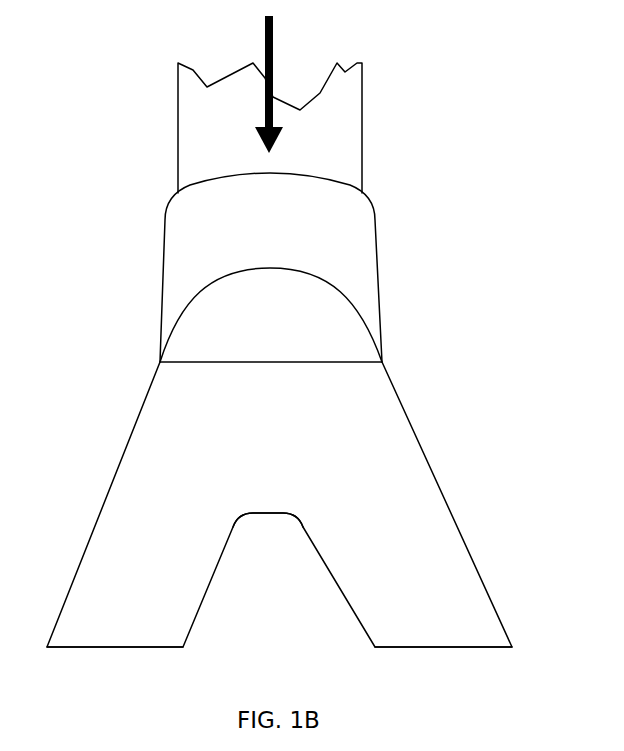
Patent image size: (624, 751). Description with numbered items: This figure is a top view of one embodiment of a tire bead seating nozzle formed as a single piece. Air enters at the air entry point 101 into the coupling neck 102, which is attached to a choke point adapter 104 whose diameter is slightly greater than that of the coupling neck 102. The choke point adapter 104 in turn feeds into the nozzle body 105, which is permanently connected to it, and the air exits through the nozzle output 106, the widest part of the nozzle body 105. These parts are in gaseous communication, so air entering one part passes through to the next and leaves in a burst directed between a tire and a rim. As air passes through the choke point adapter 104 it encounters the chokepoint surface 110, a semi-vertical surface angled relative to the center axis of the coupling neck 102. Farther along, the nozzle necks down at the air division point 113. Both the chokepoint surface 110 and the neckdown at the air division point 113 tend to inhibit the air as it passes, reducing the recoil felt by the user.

The air entry point 101 is at (273, 52).
The coupling neck 102 is at (355, 101).
The choke point adapter 104 is at (175, 253).
The nozzle body 105 is at (110, 493).
The nozzle output 106 is at (70, 648).
The chokepoint surface 110 is at (353, 328).
The air division point 113 is at (278, 503).